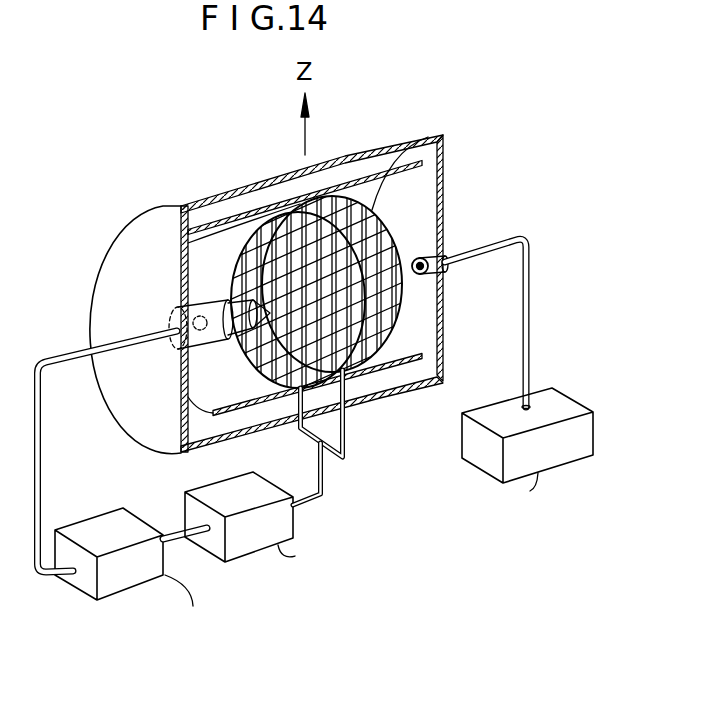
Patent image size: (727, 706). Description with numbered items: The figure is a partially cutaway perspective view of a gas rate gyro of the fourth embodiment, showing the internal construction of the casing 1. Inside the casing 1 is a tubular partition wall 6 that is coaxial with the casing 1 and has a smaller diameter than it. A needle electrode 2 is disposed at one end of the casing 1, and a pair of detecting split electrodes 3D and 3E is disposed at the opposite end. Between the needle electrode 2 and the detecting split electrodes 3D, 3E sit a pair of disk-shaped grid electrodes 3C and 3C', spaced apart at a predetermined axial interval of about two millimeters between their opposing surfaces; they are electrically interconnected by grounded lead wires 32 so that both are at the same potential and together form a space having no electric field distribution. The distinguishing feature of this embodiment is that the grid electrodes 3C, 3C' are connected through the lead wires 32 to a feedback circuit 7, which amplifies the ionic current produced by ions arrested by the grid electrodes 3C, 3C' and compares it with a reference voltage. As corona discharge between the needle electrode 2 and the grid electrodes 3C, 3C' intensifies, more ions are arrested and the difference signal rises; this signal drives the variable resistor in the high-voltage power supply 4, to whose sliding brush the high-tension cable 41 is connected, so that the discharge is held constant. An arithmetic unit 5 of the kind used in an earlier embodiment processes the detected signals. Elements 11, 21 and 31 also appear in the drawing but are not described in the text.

The casing 1 is at (406, 148).
The needle electrode 2 is at (228, 300).
The grid electrode 3C is at (317, 309).
The grid electrode 3C' is at (347, 281).
The detecting split electrode 3D is at (413, 272).
The detecting split electrode 3E is at (428, 280).
The high-voltage power supply 4 is at (92, 515).
The arithmetic unit 5 is at (482, 472).
The tubular partition wall 6 is at (232, 207).
The feedback circuit 7 is at (251, 537).
The inner wall 11 is at (343, 175).
The ion emission aperture 21 is at (201, 342).
The lead wire 31 is at (433, 245).
The lead wires 32 is at (348, 427).
The high-tension cable 41 is at (46, 372).